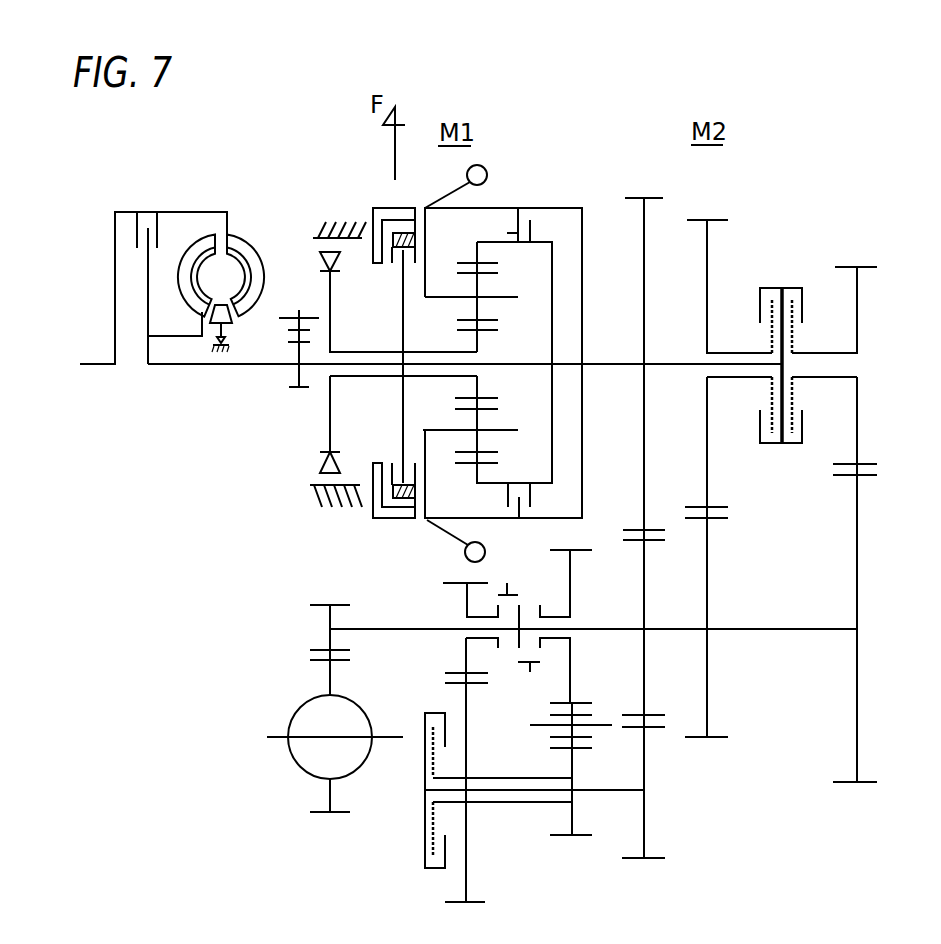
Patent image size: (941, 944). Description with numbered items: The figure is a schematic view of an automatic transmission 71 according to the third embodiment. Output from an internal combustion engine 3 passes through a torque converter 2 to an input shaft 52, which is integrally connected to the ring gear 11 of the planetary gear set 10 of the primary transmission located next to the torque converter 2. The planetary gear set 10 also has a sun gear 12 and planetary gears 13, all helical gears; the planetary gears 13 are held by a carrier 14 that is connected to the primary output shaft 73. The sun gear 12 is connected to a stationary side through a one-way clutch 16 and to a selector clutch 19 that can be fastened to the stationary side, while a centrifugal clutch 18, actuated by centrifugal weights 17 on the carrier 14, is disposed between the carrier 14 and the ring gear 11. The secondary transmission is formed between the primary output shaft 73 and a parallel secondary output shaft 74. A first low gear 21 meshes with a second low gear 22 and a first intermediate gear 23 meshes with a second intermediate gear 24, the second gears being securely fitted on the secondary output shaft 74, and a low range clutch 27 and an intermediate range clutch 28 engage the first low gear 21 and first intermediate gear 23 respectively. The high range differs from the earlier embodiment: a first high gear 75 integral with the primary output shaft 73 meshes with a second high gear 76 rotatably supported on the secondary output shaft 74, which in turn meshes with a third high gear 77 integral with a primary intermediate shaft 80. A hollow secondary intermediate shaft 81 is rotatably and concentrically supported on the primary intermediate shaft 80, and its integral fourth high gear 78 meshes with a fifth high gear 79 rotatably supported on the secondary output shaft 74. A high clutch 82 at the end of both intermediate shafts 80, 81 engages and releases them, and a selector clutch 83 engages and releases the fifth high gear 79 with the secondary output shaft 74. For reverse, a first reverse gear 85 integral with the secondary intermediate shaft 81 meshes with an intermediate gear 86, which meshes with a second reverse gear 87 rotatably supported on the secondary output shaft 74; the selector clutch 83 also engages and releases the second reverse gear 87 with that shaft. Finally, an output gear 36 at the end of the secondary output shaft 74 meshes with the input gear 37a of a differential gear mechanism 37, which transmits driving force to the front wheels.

The torque converter 2 is at (246, 231).
The engine 3 is at (165, 221).
The planetary gear set 10 is at (588, 308).
The ring gear 11 is at (480, 261).
The sun gear 12 is at (480, 338).
The planetary gears 13 is at (481, 285).
The carrier 14 is at (447, 209).
The one-way clutch 16 is at (318, 262).
The centrifugal weights 17 is at (487, 175).
The centrifugal clutch 18 is at (539, 224).
The selector clutch 19 is at (400, 271).
The first low gear 21 is at (859, 302).
The second low gear 22 is at (859, 762).
The first intermediate gear 23 is at (708, 246).
The second intermediate gear 24 is at (708, 713).
The low range clutch 27 is at (763, 285).
The intermediate range clutch 28 is at (796, 285).
The output gear 36 is at (328, 613).
The differential gear mechanism 37 is at (287, 712).
The input gear 37a is at (328, 800).
The input shaft 52 is at (281, 368).
The automatic transmission 71 is at (557, 153).
The primary output shaft 73 is at (670, 363).
The secondary output shaft 74 is at (750, 628).
The first high gear 75 is at (642, 228).
The second high gear 76 is at (646, 568).
The third high gear 77 is at (646, 842).
The fourth high gear 78 is at (468, 880).
The fifth high gear 79 is at (466, 652).
The primary intermediate shaft 80 is at (607, 792).
The secondary intermediate shaft 81 is at (505, 800).
The high clutch 82 is at (423, 879).
The selector clutch 83 is at (522, 582).
The first reverse gear 85 is at (574, 762).
The intermediate gear 86 is at (548, 730).
The second reverse gear 87 is at (572, 568).